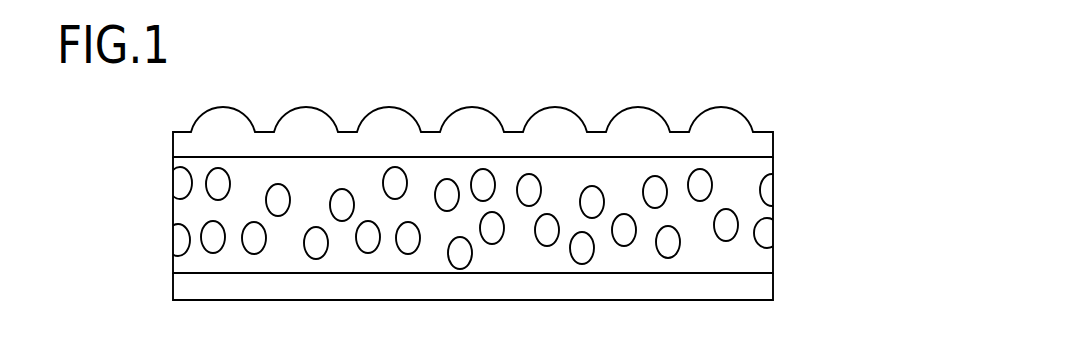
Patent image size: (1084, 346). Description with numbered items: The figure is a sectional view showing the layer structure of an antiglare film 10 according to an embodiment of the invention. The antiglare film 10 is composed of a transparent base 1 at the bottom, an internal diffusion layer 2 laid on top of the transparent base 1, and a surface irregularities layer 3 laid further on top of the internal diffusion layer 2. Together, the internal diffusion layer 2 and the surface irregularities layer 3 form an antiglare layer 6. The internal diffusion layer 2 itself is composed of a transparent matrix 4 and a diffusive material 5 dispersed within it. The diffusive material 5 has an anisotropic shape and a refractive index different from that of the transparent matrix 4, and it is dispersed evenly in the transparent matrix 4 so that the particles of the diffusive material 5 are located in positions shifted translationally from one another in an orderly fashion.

The transparent base 1 is at (757, 290).
The internal diffusion layer 2 is at (513, 207).
The surface irregularities layer 3 is at (740, 135).
The transparent matrix 4 is at (753, 262).
The diffusive material 5 is at (723, 215).
The antiglare layer 6 is at (533, 174).
The antiglare film 10 is at (561, 188).